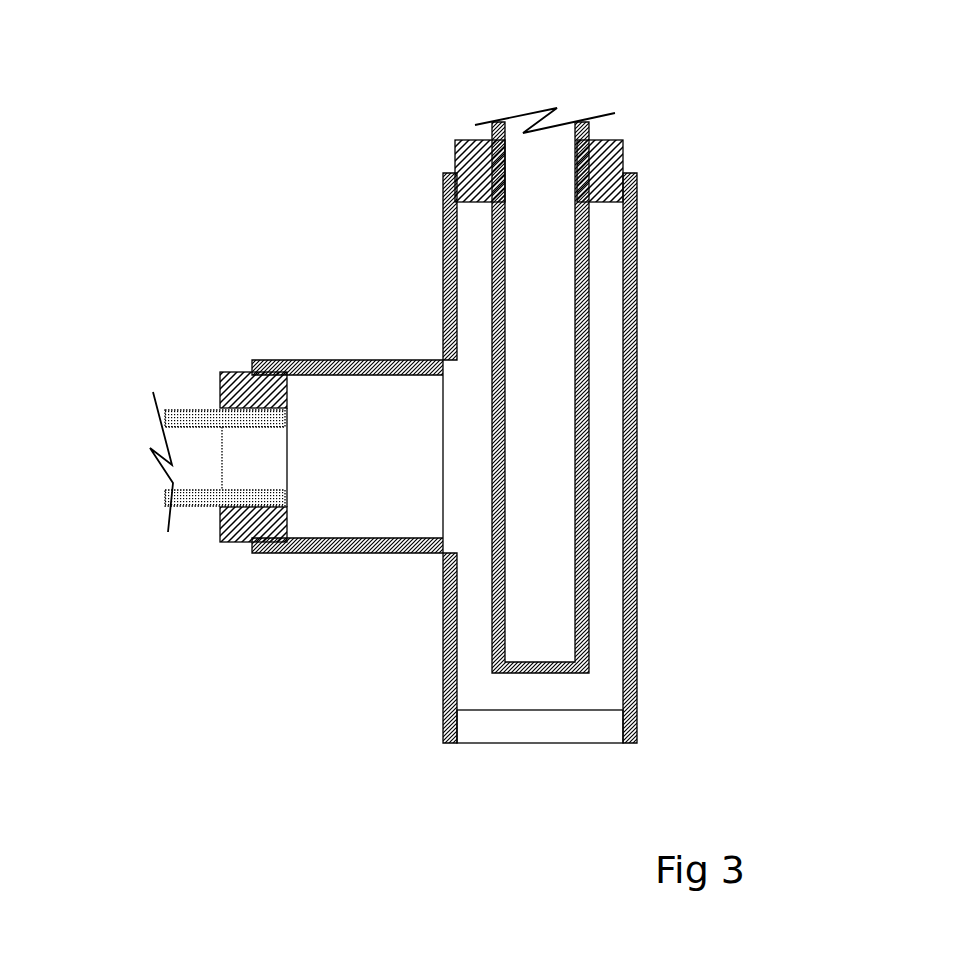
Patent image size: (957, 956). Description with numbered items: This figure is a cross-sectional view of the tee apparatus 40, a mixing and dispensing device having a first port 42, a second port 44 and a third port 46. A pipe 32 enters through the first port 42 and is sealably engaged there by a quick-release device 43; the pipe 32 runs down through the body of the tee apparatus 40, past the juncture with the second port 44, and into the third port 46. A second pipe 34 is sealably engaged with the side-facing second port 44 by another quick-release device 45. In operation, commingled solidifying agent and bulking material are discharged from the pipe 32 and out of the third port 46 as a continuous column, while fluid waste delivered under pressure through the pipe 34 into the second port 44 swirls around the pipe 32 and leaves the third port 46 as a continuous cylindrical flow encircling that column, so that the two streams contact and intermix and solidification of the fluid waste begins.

The tee apparatus 40 is at (740, 147).
The first port 42 is at (480, 247).
The pipe 32 is at (608, 133).
The quick-release device 43 is at (462, 138).
The quick-release device 45 is at (240, 372).
The pipe 34 is at (196, 410).
The second port 44 is at (300, 507).
The third port 46 is at (537, 722).